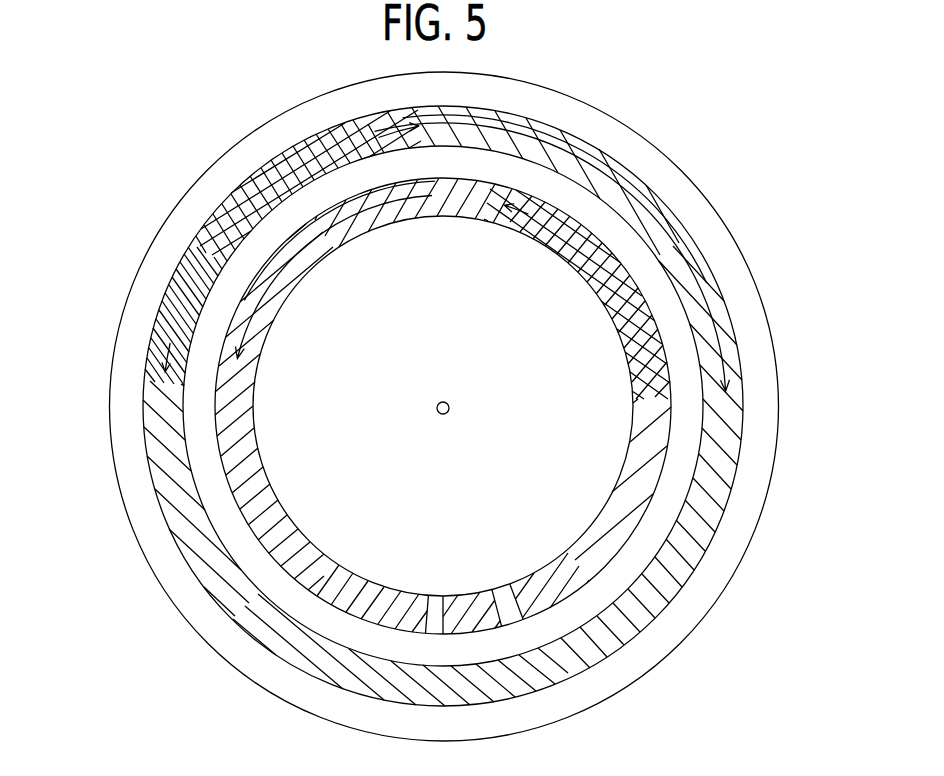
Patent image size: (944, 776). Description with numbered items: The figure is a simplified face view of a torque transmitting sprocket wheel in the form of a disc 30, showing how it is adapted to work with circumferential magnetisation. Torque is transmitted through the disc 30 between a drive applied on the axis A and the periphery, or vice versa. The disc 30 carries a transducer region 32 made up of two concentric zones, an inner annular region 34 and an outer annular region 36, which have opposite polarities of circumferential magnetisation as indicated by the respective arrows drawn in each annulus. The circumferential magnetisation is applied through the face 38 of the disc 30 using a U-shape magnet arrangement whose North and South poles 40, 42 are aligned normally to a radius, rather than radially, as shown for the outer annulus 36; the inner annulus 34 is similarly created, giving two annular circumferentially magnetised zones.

The disc 30 is at (112, 316).
The transducer region 32 is at (272, 456).
The inner annular region 34 is at (443, 422).
The outer annular region 36 is at (263, 627).
The face 38 is at (292, 218).
The North pole 40 is at (433, 597).
The South pole 42 is at (507, 595).
The axis A is at (448, 412).